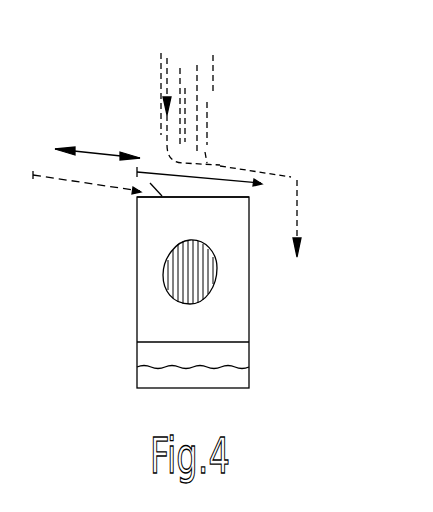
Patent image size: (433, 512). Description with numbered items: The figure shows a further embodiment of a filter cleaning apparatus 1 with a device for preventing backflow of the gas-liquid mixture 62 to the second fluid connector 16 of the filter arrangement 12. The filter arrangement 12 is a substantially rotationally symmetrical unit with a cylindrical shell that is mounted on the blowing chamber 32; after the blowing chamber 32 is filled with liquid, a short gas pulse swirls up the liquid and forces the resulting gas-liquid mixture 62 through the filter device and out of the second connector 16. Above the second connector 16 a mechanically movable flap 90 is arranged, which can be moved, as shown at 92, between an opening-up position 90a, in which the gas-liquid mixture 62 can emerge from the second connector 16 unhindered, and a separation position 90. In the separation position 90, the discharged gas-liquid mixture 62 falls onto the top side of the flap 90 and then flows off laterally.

The dispensing device 1 is at (323, 152).
The filter arrangement 12 is at (270, 304).
The second connector 16 is at (162, 197).
The blowing chamber 32 is at (249, 355).
The gas-liquid mixture 62 is at (185, 107).
The flap 90 is at (212, 175).
The opening-up position 90a is at (72, 183).
The movement of the flap 92 is at (103, 148).